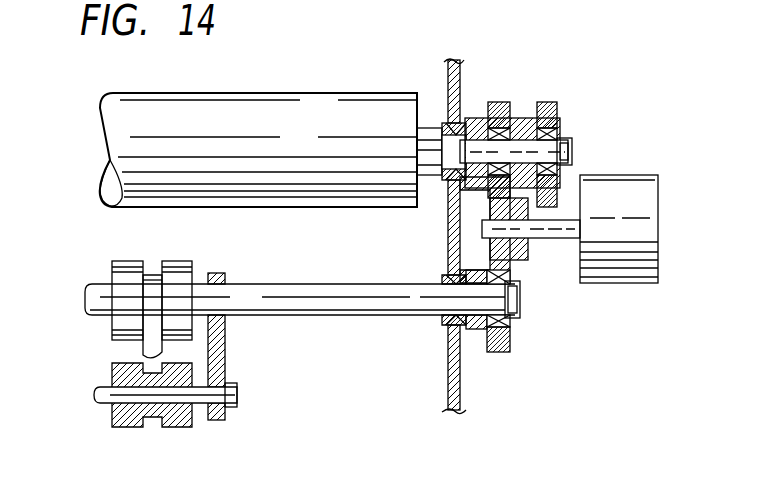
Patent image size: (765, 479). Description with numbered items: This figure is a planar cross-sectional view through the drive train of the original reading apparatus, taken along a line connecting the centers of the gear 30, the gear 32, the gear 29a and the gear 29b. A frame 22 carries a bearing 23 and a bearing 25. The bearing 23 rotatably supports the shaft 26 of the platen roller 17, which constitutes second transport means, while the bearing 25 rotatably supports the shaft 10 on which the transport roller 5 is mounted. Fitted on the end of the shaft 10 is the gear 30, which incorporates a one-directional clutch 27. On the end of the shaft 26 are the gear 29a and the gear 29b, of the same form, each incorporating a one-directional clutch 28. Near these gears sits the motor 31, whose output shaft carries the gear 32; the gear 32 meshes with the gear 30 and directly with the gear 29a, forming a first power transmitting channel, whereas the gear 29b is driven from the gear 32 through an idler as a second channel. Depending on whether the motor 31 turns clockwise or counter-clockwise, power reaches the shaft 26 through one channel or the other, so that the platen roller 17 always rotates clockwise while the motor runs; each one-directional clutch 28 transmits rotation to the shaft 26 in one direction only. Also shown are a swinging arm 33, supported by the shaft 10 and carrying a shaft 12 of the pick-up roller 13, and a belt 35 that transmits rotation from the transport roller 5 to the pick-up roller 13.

The transport roller 5 is at (112, 275).
The shaft 10 is at (300, 318).
The shaft 12 is at (100, 398).
The pick-up roller 13 is at (145, 422).
The platen roller 17 is at (320, 100).
The frame 22 is at (453, 60).
The bearing 23 is at (464, 125).
The bearing 25 is at (440, 324).
The shaft 26 is at (432, 140).
The one-directional clutch 27 is at (514, 322).
The one-directional clutch 28 is at (490, 126).
The gear 29a is at (512, 108).
The gear 29b is at (552, 112).
The gear 30 is at (498, 354).
The motor 31 is at (632, 188).
The gear 32 is at (528, 248).
The swinging arm 33 is at (220, 412).
The belt 35 is at (150, 344).